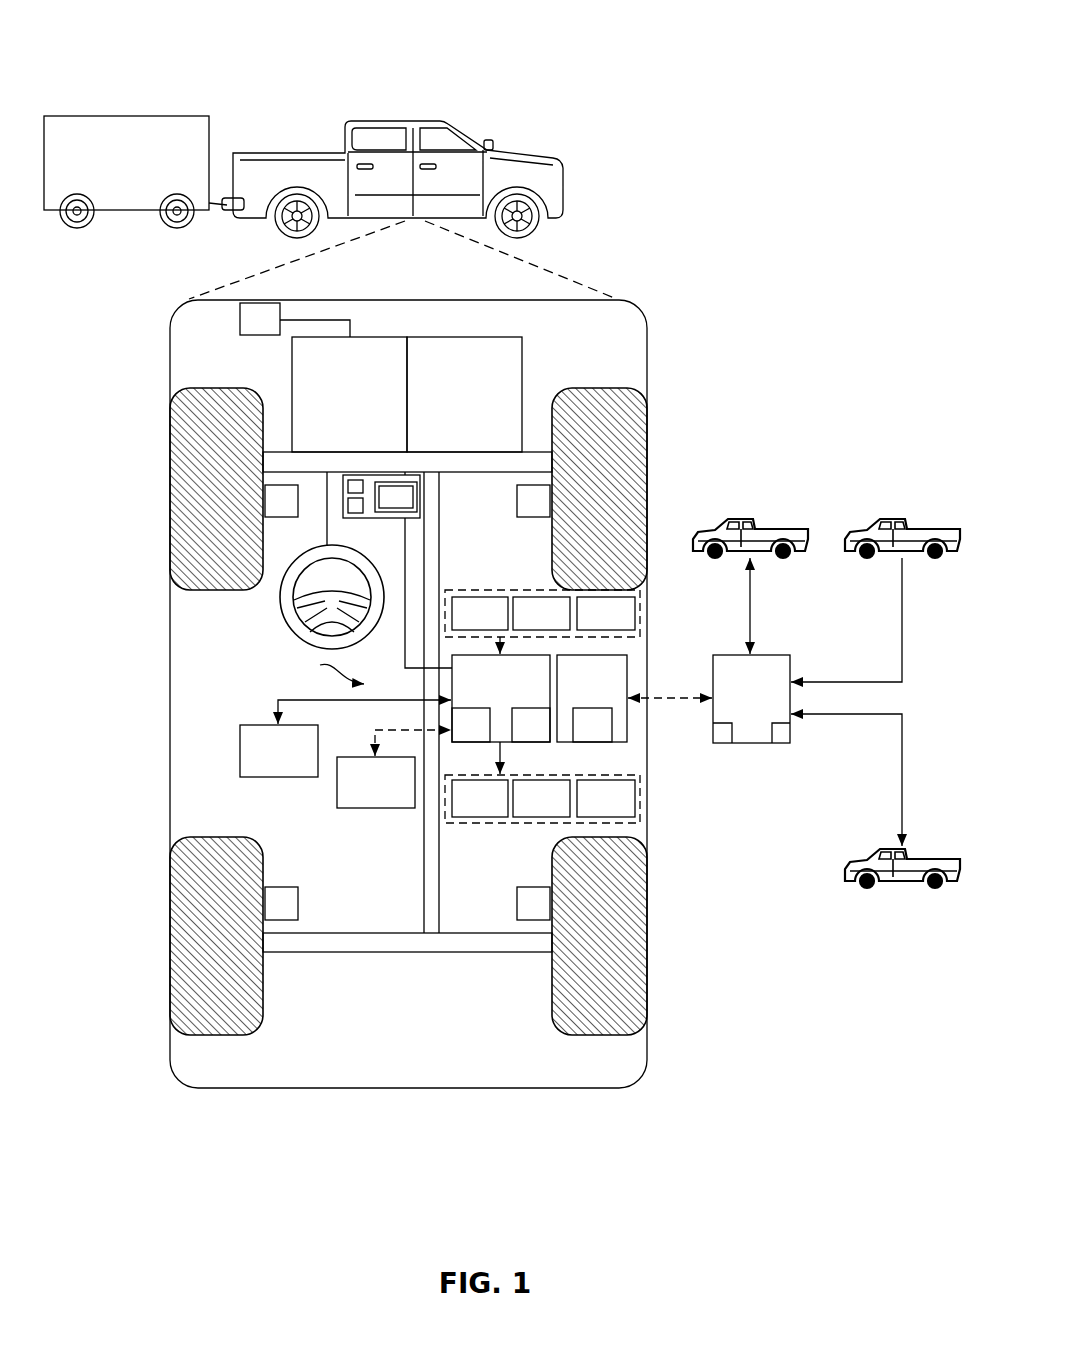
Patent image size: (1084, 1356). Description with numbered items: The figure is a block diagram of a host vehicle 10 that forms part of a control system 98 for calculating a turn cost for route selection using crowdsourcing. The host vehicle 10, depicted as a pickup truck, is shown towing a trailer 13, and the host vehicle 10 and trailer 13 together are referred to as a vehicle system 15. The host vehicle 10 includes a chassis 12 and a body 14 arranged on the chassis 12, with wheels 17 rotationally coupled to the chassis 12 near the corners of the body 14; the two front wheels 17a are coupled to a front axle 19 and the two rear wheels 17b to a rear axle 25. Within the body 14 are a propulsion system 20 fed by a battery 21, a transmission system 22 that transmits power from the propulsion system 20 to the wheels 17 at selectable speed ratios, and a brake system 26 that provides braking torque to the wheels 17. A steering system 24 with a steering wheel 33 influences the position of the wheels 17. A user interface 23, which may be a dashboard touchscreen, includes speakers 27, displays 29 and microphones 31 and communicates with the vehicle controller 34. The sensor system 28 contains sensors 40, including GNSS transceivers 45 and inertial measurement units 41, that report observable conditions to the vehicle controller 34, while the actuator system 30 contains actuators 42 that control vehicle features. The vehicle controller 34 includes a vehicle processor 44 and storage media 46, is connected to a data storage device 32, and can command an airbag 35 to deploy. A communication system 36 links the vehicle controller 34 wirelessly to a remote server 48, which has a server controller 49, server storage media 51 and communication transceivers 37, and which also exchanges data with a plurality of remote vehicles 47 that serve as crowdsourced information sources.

The host vehicle 10 is at (540, 152).
The chassis 12 is at (424, 840).
The trailer 13 is at (110, 116).
The body 14 is at (170, 657).
The vehicle system 15 is at (290, 70).
The wheels 17 is at (212, 388).
The front wheels 17a is at (185, 475).
The rear wheels 17b is at (185, 927).
The front axle 19 is at (492, 472).
The propulsion system 20 is at (337, 406).
The battery 21 is at (262, 303).
The transmission system 22 is at (452, 406).
The user interface 23 is at (392, 482).
The steering system 24 is at (349, 522).
The rear axle 25 is at (468, 933).
The brake system 26 is at (293, 514).
The speakers 27 is at (352, 480).
The sensor system 28 is at (508, 590).
The displays 29 is at (348, 507).
The actuator system 30 is at (515, 823).
The microphones 31 is at (385, 510).
The data storage device 32 is at (363, 796).
The steering wheel 33 is at (283, 607).
The vehicle controller 34 is at (488, 697).
The airbag 35 is at (266, 765).
The communication system 36 is at (579, 697).
The communication transceivers 37 is at (580, 738).
The sensors 40 is at (468, 626).
The inertial measurement units 41 is at (594, 626).
The actuators 42 is at (468, 812).
The vehicle processor 44 is at (459, 738).
The GNSS transceivers 45 is at (529, 626).
The vehicle computer readable storage device or media 46 is at (519, 738).
The remote vehicles 47 is at (750, 517).
The remote server 48 is at (739, 709).
The server controller 49 is at (722, 742).
The server computer readable storage device or media 51 is at (778, 742).
The control system 98 is at (327, 665).